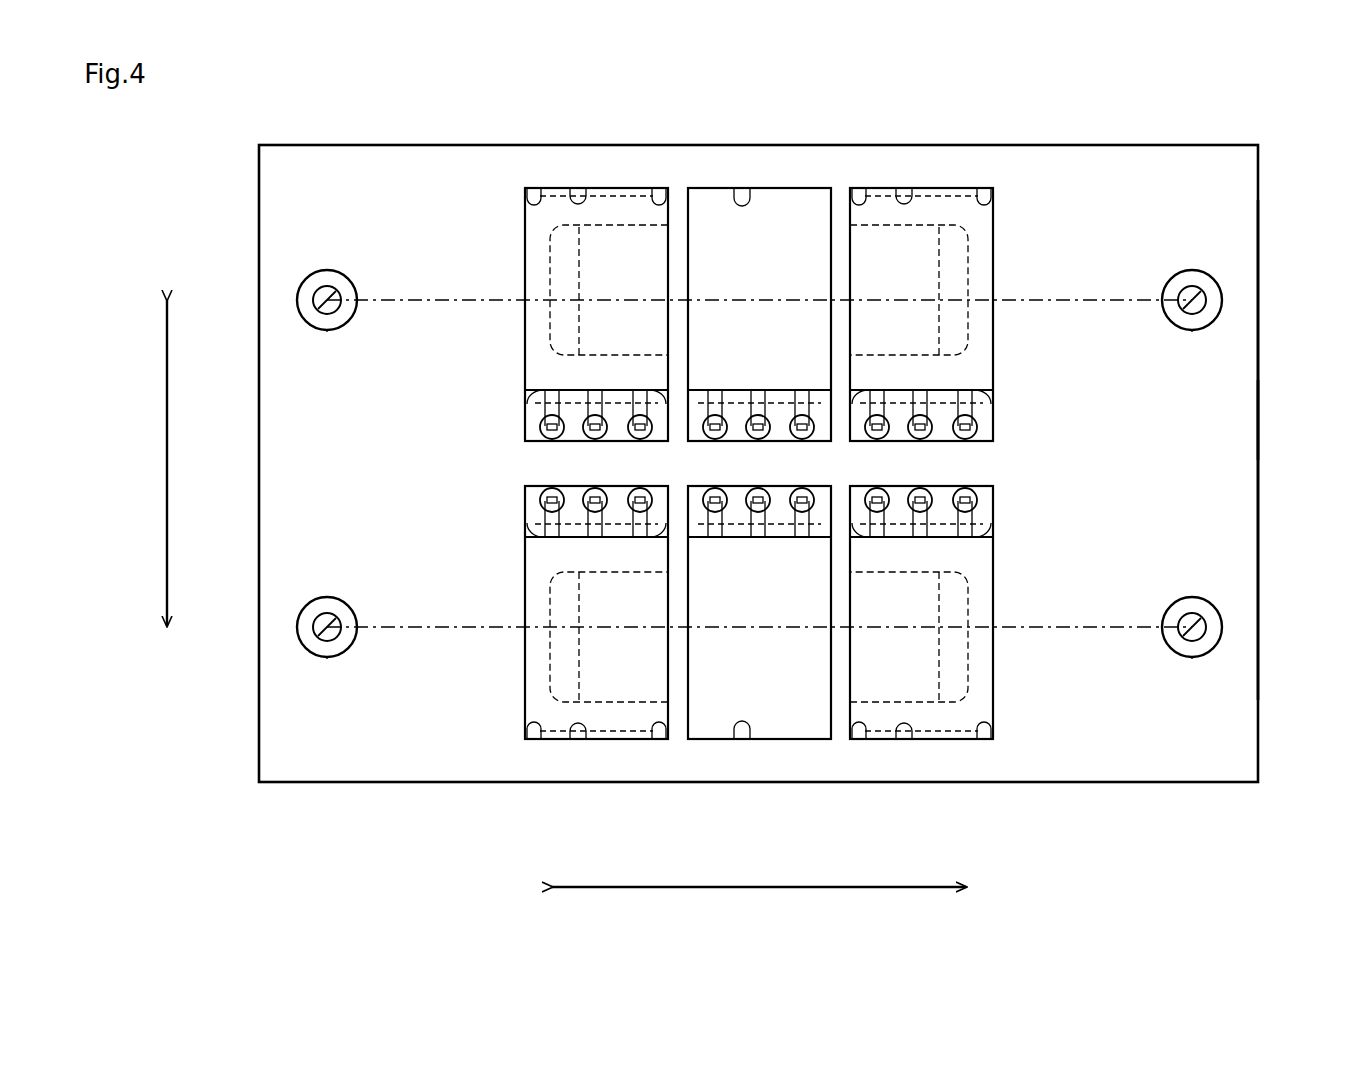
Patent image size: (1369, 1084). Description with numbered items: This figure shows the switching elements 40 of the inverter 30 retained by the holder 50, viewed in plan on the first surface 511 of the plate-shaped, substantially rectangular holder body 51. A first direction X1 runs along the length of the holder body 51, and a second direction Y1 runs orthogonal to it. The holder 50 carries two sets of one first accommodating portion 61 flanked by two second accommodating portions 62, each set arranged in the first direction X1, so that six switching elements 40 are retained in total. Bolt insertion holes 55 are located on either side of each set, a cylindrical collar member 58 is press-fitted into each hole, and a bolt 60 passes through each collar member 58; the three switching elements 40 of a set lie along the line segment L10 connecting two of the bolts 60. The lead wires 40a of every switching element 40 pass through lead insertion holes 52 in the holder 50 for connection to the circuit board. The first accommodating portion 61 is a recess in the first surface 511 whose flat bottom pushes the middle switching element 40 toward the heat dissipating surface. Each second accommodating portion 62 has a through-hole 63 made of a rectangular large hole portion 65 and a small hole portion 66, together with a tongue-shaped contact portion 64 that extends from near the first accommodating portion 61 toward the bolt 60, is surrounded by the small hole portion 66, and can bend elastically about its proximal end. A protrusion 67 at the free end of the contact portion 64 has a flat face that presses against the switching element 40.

The inverter 30 is at (1205, 122).
The switching element 40 is at (618, 200).
The lead wire 40a is at (640, 396).
The holder 50 is at (1258, 203).
The holder body 51 is at (1258, 330).
The first surface 511 is at (1240, 422).
The lead insertion hole 52 is at (638, 488).
The bolt insertion hole 55 is at (329, 331).
The collar member 58 is at (325, 276).
The bolt 60 is at (338, 308).
The first accommodating portion 61 is at (742, 188).
The second accommodating portion 62 is at (578, 188).
The through-hole 63 is at (672, 202).
The contact portion 64 is at (550, 248).
The large hole portion 65 is at (522, 200).
The small hole portion 66 is at (530, 397).
The protrusion 67 is at (550, 274).
The line segment L10 is at (712, 300).
The first direction X1 is at (760, 890).
The second direction Y1 is at (167, 463).